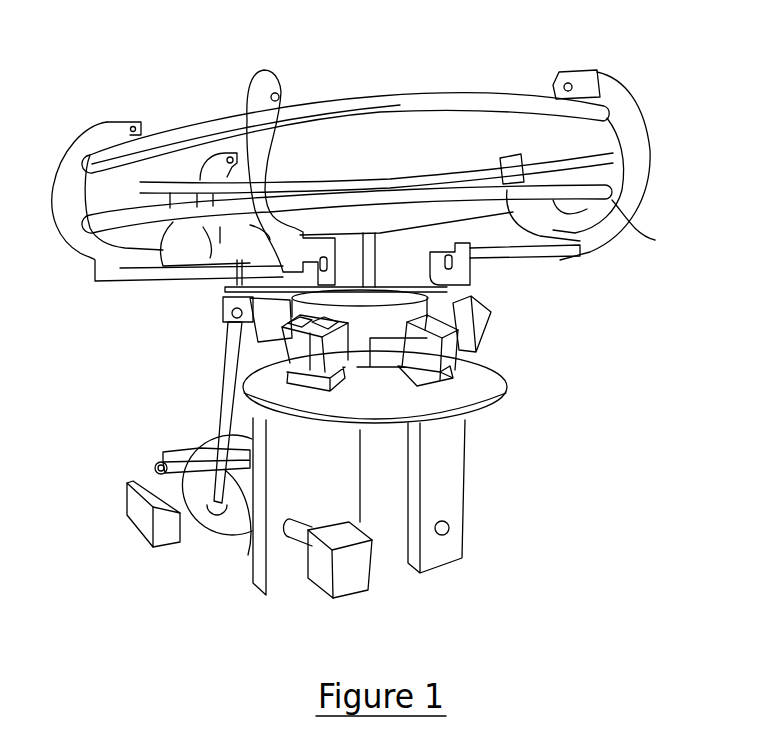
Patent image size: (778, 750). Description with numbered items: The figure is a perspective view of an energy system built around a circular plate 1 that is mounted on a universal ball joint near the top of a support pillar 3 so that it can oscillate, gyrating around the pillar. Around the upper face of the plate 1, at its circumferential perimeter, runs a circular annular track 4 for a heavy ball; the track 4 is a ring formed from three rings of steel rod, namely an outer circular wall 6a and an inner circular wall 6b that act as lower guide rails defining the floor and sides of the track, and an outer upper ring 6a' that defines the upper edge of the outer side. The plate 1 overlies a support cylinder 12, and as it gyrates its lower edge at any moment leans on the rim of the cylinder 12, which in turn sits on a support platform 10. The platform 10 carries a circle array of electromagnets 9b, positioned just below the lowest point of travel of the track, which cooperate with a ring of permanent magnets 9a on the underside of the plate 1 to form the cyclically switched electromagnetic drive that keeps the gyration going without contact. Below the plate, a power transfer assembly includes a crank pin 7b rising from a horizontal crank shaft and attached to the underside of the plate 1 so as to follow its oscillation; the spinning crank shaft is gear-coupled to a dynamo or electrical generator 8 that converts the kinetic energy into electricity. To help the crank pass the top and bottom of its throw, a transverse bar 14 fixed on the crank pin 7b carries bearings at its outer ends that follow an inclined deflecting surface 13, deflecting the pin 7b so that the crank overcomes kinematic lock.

The circular plate 1 is at (412, 287).
The support pillar/shaft 3 is at (377, 258).
The circular annular track 4 is at (558, 143).
The outer upper ring 6a' is at (635, 84).
The outer circular wall 6a is at (638, 166).
The inner circular wall 6b is at (620, 213).
The crank pin 7b is at (217, 405).
The dynamo/electrical energy generator 8 is at (372, 577).
The permanent magnets 9a is at (217, 288).
The electro-magnet array 9b is at (300, 352).
The support platform 10 is at (505, 398).
The support cylinder 12 is at (432, 306).
The end of throw guiding/deflecting surface 13 is at (132, 505).
The transverse bar 14 is at (533, 257).